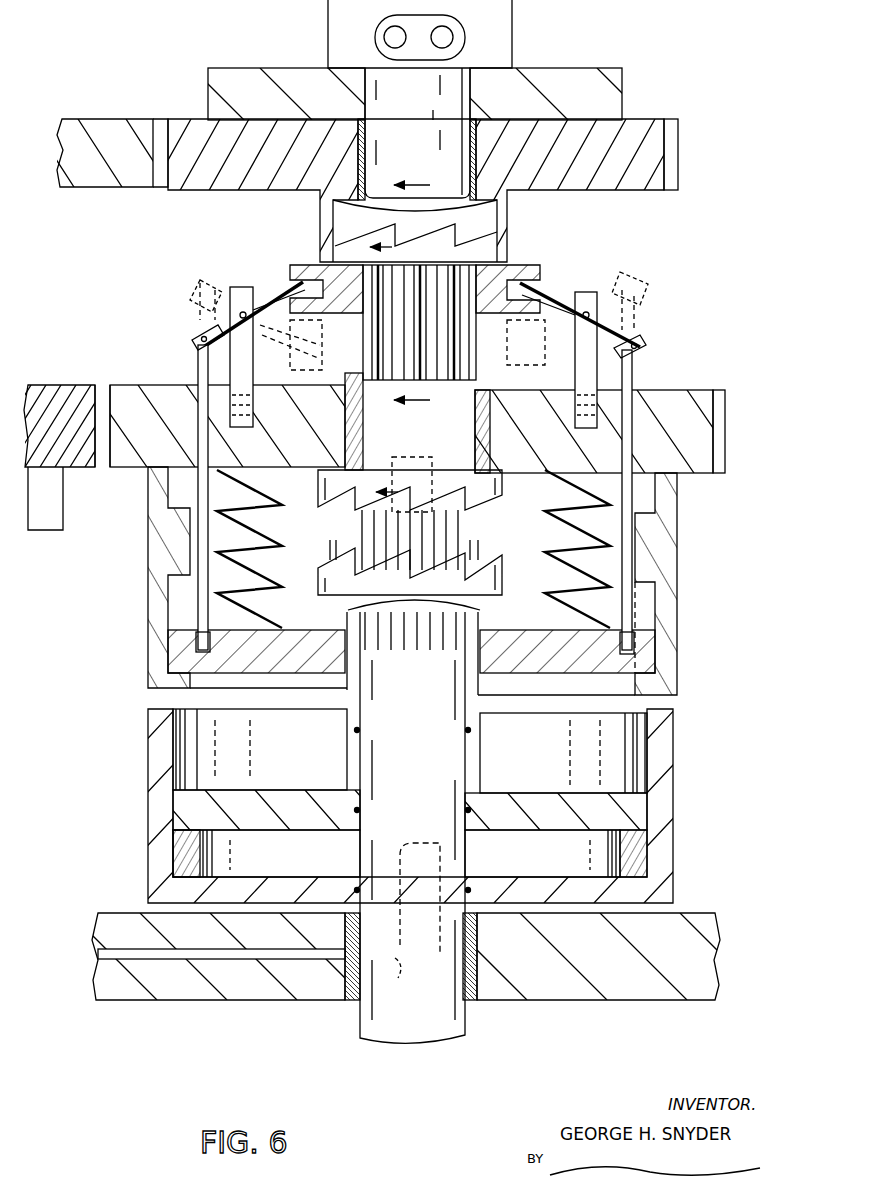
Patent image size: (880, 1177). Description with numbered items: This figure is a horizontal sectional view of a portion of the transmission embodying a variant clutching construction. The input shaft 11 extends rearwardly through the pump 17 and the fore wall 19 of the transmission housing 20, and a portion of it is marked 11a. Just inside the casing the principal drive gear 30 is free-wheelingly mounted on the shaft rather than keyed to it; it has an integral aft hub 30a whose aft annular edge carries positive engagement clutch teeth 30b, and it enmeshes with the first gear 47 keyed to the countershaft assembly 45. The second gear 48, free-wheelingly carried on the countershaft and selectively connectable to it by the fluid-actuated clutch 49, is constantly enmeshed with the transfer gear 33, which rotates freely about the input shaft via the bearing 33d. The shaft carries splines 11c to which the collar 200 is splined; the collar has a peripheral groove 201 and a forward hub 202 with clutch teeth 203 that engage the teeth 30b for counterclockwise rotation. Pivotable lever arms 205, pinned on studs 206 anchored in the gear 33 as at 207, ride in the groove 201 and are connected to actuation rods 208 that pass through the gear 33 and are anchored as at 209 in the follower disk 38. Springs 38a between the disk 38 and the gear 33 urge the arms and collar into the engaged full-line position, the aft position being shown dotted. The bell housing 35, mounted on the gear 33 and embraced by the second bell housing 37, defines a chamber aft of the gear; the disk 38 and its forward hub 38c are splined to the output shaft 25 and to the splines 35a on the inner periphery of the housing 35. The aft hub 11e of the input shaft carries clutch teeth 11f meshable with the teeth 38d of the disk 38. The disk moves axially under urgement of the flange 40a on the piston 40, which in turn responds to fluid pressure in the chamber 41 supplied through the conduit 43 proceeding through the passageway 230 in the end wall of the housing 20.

The input shaft 11 is at (432, 106).
The shaft portion 11a is at (398, 456).
The splines 11c is at (482, 324).
The hub 11e is at (500, 478).
The positive engagement clutch teeth 11f is at (350, 507).
The pump 17 is at (508, 34).
The fore wall 19 is at (574, 80).
The transmission housing 20 is at (630, 64).
The output shaft 25 is at (428, 812).
The principal drive gear 30 is at (680, 140).
The aft hub 30a is at (328, 202).
The positive engagement clutch teeth 30b is at (345, 240).
The transfer gear 33 is at (716, 390).
The bearing 33d is at (480, 414).
The bell housing 35 is at (683, 535).
The splines 35a is at (643, 606).
The second bell housing 37 is at (670, 798).
The follower disk 38 is at (544, 640).
The springs 38a is at (348, 505).
The hub 38c is at (355, 600).
The positive engagement clutch teeth 38d is at (500, 560).
The piston 40 is at (615, 812).
The flange 40a is at (358, 750).
The chamber 41 is at (545, 850).
The conduit 43 is at (395, 983).
The countershaft assembly 45 is at (82, 114).
The first gear 47 is at (86, 189).
The second gear 48 is at (62, 390).
The clutch 49 is at (47, 500).
The collar 200 is at (542, 272).
The peripheral groove 201 is at (307, 283).
The forward hub 202 is at (507, 254).
The positive engagement clutch teeth 203 is at (505, 232).
The lever arms 205 is at (268, 330).
The studs 206 is at (203, 352).
The pin connection 207 is at (585, 318).
The actuation rods 208 is at (198, 375).
The anchor 209 is at (632, 660).
The passageway 230 is at (243, 960).